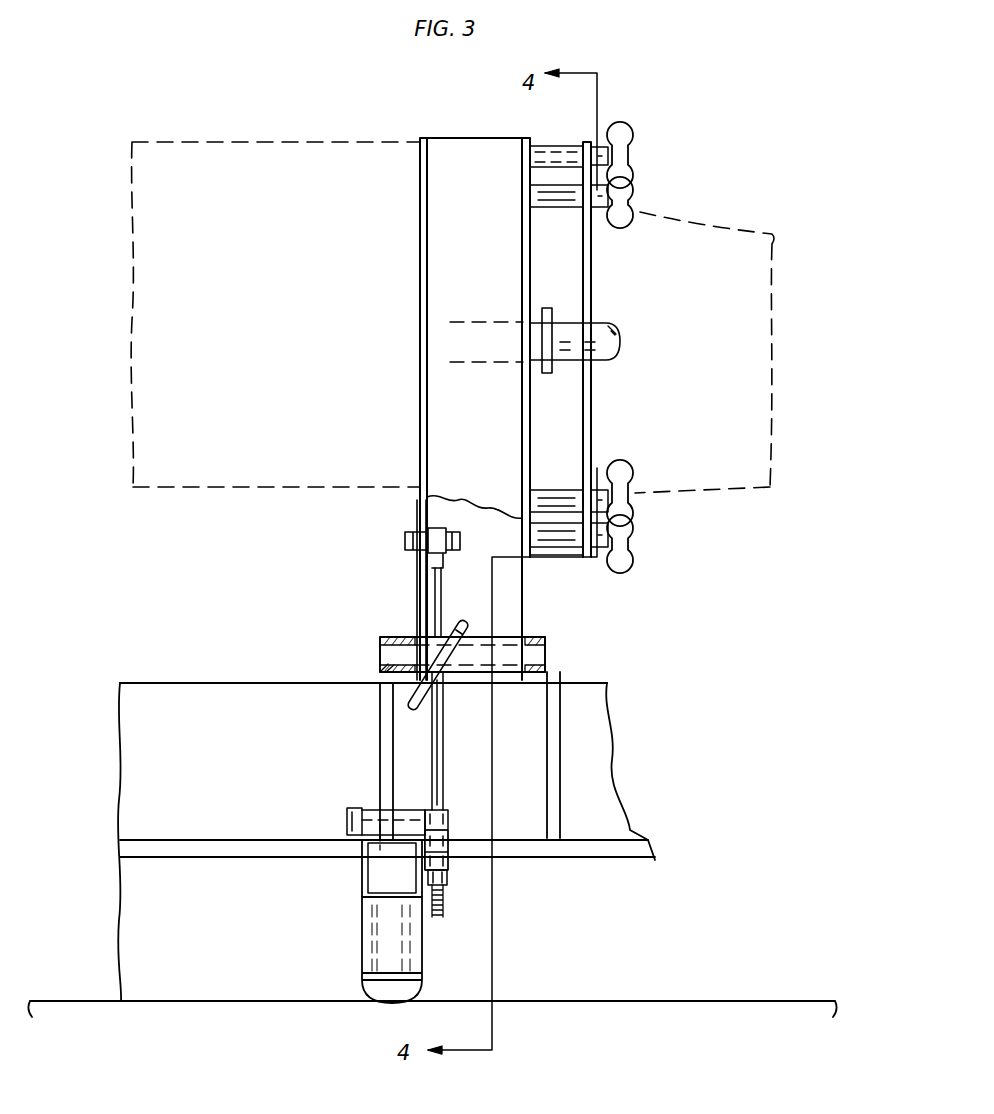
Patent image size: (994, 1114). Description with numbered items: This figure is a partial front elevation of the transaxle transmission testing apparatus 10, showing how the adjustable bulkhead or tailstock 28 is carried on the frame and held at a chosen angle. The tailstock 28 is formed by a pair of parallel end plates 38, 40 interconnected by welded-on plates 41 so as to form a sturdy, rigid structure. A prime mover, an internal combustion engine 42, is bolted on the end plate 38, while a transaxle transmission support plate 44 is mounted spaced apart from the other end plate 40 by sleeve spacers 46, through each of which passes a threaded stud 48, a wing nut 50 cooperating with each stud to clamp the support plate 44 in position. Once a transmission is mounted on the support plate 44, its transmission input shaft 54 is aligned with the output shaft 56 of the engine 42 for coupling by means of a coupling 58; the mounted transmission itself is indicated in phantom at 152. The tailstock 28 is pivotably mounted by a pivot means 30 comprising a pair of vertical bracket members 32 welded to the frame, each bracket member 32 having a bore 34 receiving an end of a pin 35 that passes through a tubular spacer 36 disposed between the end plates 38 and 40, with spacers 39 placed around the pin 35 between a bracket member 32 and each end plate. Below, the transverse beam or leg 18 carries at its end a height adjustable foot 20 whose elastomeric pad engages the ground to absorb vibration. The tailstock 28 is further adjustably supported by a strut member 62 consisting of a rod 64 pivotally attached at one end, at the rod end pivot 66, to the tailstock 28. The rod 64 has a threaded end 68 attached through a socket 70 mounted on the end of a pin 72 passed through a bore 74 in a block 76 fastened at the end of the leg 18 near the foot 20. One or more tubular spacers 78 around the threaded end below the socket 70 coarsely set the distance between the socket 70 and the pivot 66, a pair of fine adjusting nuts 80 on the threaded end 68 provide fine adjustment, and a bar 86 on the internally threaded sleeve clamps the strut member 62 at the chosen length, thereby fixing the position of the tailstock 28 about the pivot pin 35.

The transaxle transmission testing apparatus 10 is at (134, 683).
The transverse beam or leg 18 is at (362, 878).
The height adjustable foot 20 is at (372, 954).
The bulkhead or tailstock 28 is at (462, 138).
The pivot means 30 is at (548, 634).
The vertical bracket member 32 is at (383, 738).
The bore 34 is at (392, 662).
The pin 35 is at (380, 652).
The tubular spacer 36 is at (510, 636).
The end plate 38 is at (420, 577).
The spacer 39 is at (402, 636).
The end plate 40 is at (525, 218).
The welded-on plate 41 is at (458, 440).
The internal combustion engine 42 is at (343, 142).
The transaxle transmission support plate 44 is at (592, 250).
The sleeve spacer 46 is at (576, 146).
The threaded stud 48 is at (584, 132).
The wing nut 50 is at (624, 184).
The transmission input shaft 54 is at (600, 332).
The output shaft 56 is at (540, 318).
The coupling 58 is at (547, 374).
The strut member 62 is at (441, 717).
The rod 64 is at (440, 594).
The rod end pivot 66 is at (437, 531).
The threaded end 68 is at (445, 907).
The socket 70 is at (444, 814).
The pin 72 is at (405, 814).
The bore 74 is at (392, 868).
The block 76 is at (365, 808).
The tubular spacer 78 is at (442, 856).
The fine adjusting nut 80 is at (447, 877).
The bar 86 is at (466, 622).
The panel (phantom) 152 is at (737, 232).